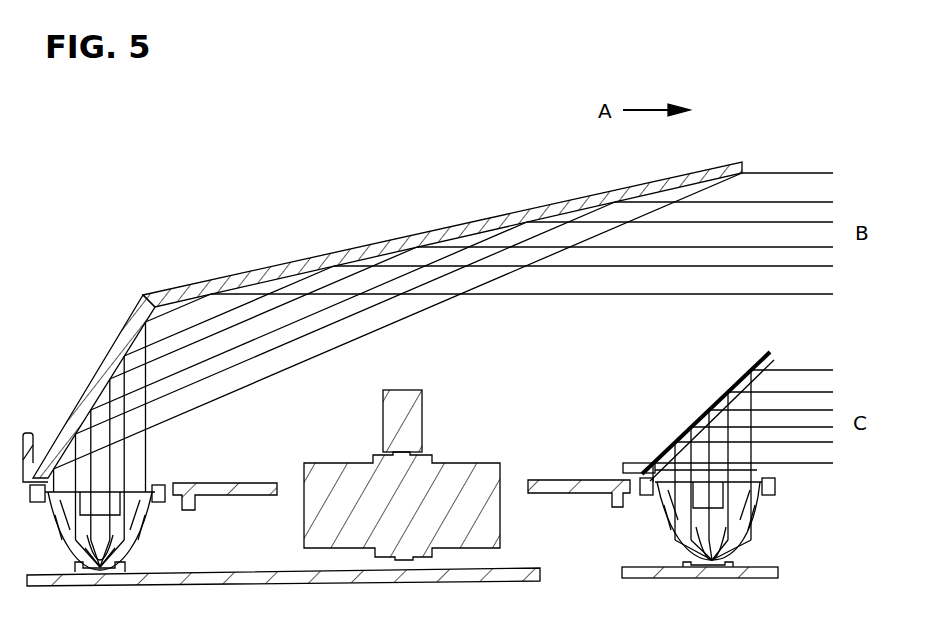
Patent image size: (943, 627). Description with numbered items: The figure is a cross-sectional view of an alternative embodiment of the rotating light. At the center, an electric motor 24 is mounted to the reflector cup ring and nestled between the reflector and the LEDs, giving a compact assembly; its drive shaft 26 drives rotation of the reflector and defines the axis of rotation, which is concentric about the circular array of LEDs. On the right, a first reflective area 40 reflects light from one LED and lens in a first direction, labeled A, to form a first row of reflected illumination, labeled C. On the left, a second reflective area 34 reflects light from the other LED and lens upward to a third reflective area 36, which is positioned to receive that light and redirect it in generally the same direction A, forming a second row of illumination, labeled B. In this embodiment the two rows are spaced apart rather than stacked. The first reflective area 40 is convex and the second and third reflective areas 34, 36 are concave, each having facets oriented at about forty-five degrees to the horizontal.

The electric motor 24 is at (468, 462).
The drive shaft 26 is at (418, 390).
The second reflective area 34 is at (108, 368).
The third reflective area 36 is at (356, 258).
The first reflective area 40 is at (765, 358).